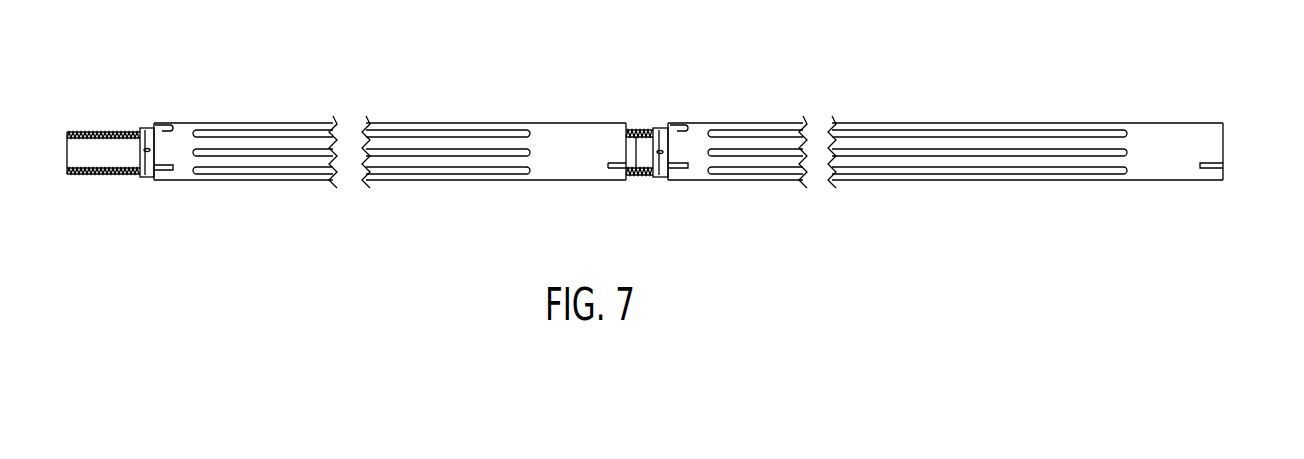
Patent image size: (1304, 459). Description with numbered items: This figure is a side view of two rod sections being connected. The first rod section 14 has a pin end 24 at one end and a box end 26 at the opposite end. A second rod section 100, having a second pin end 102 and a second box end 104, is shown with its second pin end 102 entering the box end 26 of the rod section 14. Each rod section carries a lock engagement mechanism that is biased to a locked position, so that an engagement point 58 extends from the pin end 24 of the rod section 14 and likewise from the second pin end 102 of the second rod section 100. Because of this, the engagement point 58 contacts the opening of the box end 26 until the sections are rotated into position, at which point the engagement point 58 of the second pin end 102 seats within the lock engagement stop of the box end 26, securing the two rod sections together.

The first rod section 14 is at (450, 122).
The pin end 24 is at (108, 155).
The box end 26 is at (627, 130).
The engagement point 58 is at (152, 127).
The second rod section 100 is at (758, 123).
The second pin end 102 is at (640, 132).
The second box end 104 is at (1223, 128).